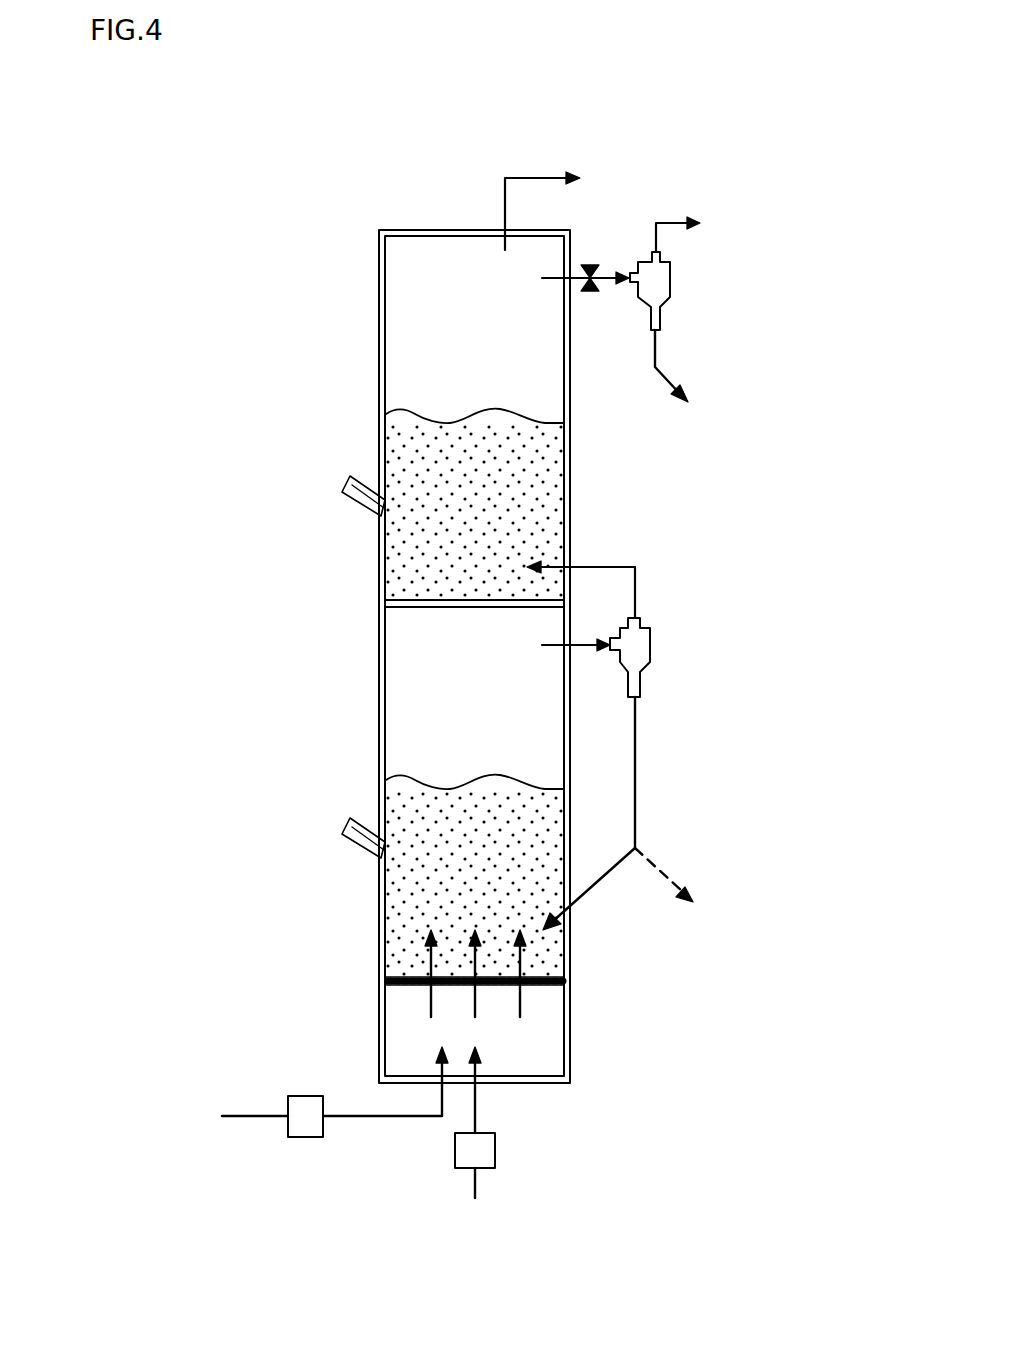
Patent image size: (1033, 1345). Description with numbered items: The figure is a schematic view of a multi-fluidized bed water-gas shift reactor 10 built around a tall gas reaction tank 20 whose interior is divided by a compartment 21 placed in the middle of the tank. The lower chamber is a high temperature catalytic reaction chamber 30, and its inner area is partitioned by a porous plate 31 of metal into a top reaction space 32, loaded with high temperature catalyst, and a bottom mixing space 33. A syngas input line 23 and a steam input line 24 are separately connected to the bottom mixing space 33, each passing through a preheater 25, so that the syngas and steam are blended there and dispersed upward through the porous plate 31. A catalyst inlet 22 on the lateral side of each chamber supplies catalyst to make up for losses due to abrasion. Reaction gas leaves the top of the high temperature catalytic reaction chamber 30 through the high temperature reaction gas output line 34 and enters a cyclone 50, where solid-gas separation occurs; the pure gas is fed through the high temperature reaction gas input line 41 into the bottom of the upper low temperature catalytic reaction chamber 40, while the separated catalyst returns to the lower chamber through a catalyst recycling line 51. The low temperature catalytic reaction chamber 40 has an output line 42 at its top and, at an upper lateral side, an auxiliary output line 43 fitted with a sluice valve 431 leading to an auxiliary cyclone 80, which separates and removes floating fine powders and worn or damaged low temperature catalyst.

The multi-fluidized bed water-gas shift reactor 10 is at (750, 233).
The gas reaction tank 20 is at (372, 290).
The compartment 21 is at (410, 612).
The catalyst inlet 22 is at (343, 495).
The syngas input line 23 is at (477, 1113).
The steam input line 24 is at (397, 1116).
The preheater 25 is at (310, 1128).
The high temperature catalytic reaction chamber 30 is at (207, 915).
The porous plate 31 is at (540, 985).
The top reaction space 32 is at (405, 742).
The bottom mixing space 33 is at (398, 1027).
The high temperature reaction gas output line 34 is at (582, 645).
The low temperature catalytic reaction chamber 40 is at (413, 366).
The high temperature reaction gas input line 41 is at (603, 567).
The output line 42 is at (505, 178).
The auxiliary output line 43 is at (552, 278).
The sluice valve 431 is at (590, 290).
The cyclone 50 is at (640, 648).
The catalyst recycling line 51 is at (606, 875).
The auxiliary cyclone 80 is at (672, 281).